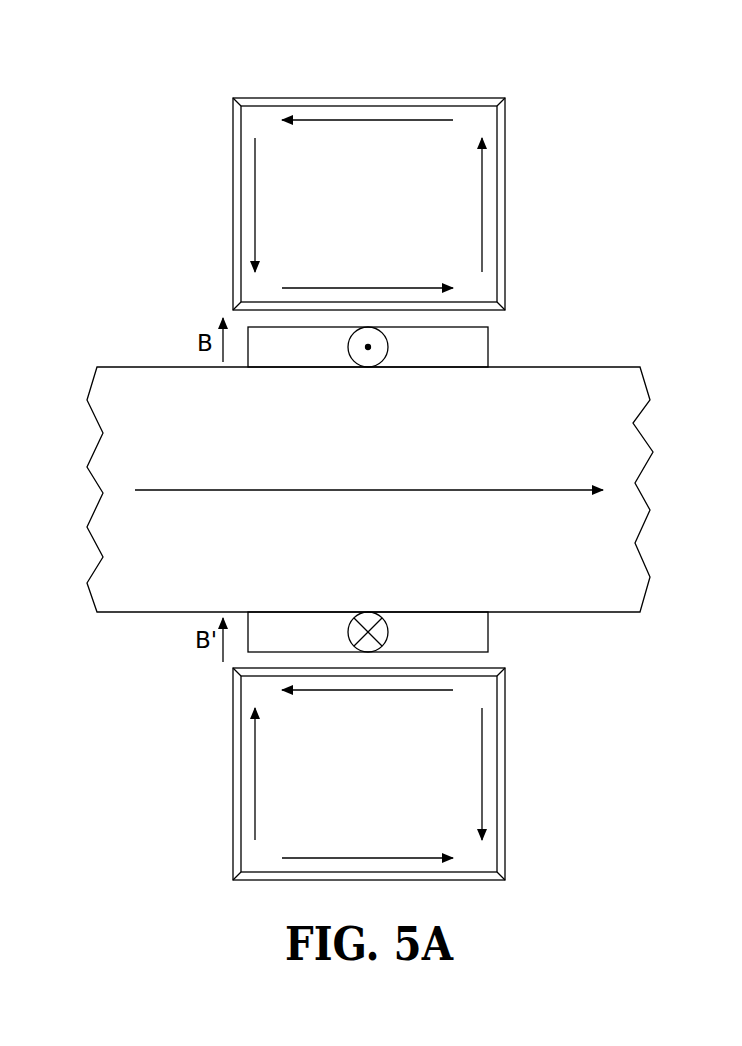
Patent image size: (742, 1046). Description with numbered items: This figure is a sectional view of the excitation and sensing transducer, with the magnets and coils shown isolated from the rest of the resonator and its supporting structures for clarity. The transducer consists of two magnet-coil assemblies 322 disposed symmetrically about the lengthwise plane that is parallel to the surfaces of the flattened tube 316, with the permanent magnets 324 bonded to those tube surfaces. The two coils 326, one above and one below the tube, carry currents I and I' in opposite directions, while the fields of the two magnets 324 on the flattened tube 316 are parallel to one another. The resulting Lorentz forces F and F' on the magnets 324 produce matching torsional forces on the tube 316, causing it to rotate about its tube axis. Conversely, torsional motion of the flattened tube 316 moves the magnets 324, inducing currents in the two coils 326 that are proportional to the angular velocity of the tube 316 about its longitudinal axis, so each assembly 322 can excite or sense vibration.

The flattened tube 316 is at (607, 612).
The magnet-coil assembly 322 is at (401, 461).
The permanent magnet 324 is at (488, 347).
The coil 326 is at (505, 205).